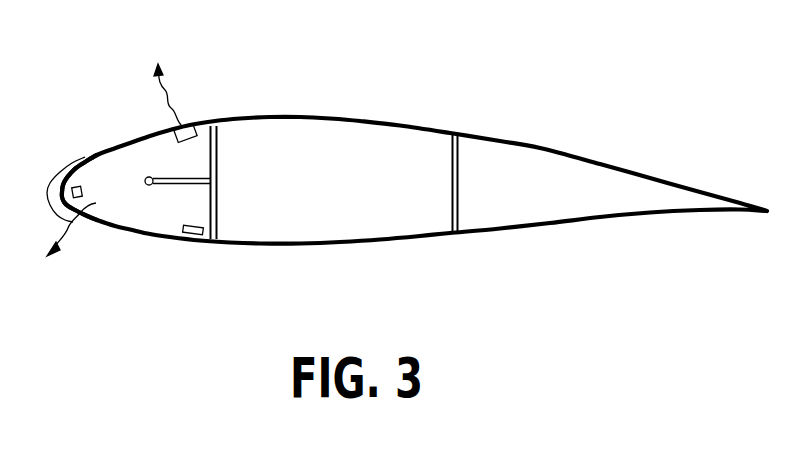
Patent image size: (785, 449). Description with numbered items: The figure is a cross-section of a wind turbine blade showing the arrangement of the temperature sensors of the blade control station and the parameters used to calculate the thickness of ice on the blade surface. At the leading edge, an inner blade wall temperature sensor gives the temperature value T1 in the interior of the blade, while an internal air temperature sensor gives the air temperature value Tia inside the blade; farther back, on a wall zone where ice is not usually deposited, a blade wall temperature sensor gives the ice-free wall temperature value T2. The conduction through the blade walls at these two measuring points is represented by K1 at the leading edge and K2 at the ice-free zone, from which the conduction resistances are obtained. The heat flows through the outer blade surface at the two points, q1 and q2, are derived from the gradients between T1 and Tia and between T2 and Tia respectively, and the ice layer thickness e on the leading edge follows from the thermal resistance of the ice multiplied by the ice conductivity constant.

The inner blade wall temperature value at the leading edge T1 is at (81, 186).
The blade wall temperature value in an ice-free zone T2 is at (198, 125).
The internal air temperature value Tia is at (175, 165).
The blade wall conduction at point one K1 is at (97, 226).
The blade wall conduction at point two K2 is at (131, 140).
The ice layer thickness e is at (53, 207).
The heat flow at point one q1 is at (61, 242).
The heat flow at point two q2 is at (163, 75).